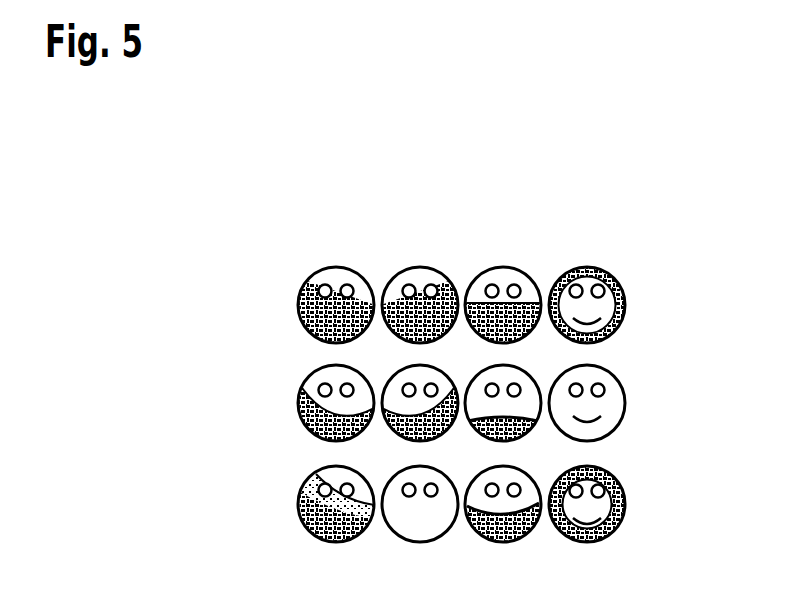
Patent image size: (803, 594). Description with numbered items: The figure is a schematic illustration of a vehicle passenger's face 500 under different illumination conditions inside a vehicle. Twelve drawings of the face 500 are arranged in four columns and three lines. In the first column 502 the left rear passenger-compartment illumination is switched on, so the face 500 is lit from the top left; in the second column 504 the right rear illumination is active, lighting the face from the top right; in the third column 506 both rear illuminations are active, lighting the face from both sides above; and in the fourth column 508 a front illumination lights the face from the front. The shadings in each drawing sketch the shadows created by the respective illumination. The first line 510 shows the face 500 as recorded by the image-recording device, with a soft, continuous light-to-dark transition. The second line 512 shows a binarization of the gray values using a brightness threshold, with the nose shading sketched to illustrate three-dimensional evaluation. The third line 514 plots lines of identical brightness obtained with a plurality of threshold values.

The face 500 is at (621, 314).
The first column 502 is at (375, 246).
The second column 504 is at (459, 246).
The third column 506 is at (542, 246).
The fourth column 508 is at (626, 246).
The first line 510 is at (285, 262).
The second line 512 is at (285, 363).
The third line 514 is at (285, 463).